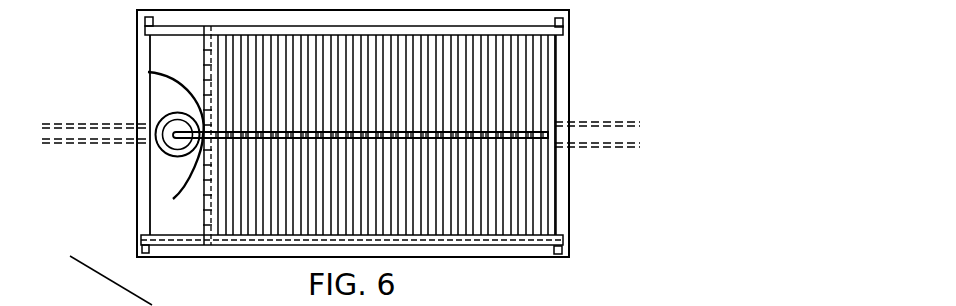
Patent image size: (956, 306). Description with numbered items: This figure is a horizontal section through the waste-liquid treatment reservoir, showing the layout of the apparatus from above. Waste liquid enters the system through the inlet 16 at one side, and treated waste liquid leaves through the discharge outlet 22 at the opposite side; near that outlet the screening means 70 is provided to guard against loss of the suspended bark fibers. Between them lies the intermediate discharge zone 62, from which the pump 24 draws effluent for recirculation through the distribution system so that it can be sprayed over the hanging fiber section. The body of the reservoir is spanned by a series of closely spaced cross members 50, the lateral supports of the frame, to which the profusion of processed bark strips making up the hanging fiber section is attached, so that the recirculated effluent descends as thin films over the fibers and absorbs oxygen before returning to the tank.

The inlet 16 is at (612, 122).
The discharge outlet 22 is at (71, 124).
The pump 24 is at (176, 112).
The cross members 50 is at (528, 77).
The intermediate discharge zone 62 is at (163, 167).
The screening means 70 is at (173, 198).